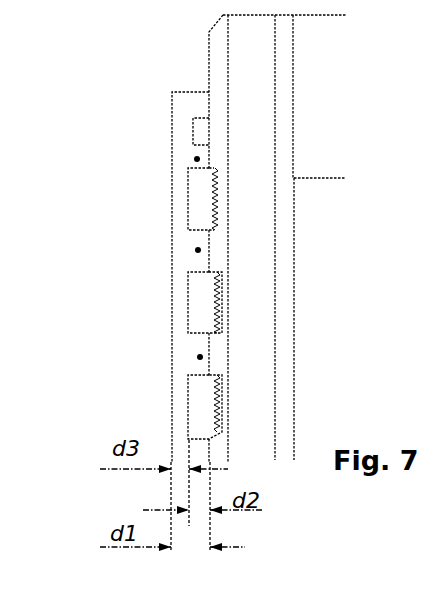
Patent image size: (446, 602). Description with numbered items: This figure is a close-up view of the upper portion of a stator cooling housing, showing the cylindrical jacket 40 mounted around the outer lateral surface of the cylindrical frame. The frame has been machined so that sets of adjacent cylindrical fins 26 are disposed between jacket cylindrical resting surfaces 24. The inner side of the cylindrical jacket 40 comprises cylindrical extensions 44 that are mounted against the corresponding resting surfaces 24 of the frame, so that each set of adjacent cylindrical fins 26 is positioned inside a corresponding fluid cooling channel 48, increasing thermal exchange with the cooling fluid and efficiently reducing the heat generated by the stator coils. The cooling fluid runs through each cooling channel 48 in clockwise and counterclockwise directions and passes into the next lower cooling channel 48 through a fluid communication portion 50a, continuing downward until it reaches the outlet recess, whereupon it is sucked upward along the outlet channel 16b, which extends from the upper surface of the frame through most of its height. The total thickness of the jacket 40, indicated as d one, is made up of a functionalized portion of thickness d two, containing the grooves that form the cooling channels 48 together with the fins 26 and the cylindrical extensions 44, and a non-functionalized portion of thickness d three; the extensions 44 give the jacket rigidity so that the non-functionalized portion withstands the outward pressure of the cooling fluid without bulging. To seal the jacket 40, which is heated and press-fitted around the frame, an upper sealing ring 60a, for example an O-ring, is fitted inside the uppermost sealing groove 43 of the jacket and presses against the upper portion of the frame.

The outlet channel 16b is at (257, 88).
The jacket cylindrical resting surface 24 is at (210, 162).
The adjacent cylindrical fins 26 is at (200, 212).
The cylindrical jacket 40 is at (140, 257).
The uppermost sealing groove 43 is at (192, 130).
The cylindrical extensions 44 is at (194, 158).
The fluid cooling channel 48 is at (200, 192).
The fluid communication portion 50a is at (218, 357).
The upper sealing ring 60a is at (204, 130).